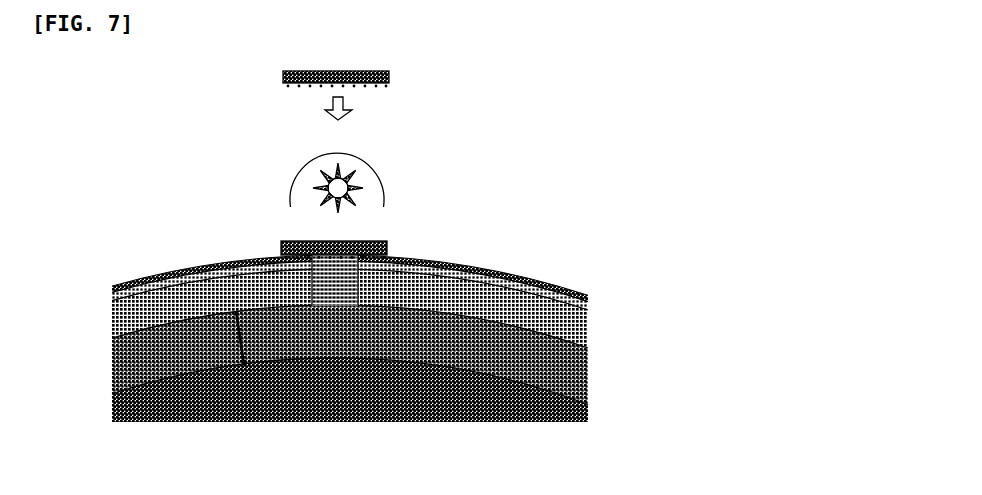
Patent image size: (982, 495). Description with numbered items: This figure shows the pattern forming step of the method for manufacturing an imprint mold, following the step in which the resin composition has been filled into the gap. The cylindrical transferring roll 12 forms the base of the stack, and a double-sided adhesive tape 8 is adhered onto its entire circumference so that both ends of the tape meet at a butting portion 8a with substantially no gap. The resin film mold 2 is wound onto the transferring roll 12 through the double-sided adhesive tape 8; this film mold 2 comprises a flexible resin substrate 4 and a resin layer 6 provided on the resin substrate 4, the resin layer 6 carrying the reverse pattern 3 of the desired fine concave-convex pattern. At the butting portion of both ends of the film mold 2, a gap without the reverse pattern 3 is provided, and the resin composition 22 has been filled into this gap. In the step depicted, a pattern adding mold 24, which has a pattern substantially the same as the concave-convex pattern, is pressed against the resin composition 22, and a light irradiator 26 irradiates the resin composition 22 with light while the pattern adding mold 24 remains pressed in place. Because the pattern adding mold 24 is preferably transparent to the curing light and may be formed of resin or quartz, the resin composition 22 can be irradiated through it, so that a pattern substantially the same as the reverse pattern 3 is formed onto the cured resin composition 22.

The resin film mold 2 is at (352, 342).
The reverse pattern 3 is at (440, 263).
The resin substrate 4 is at (582, 328).
The resin layer 6 is at (587, 306).
The double-sided adhesive tape 8 is at (578, 373).
The butting portion 8a is at (233, 337).
The transferring roll 12 is at (313, 410).
The resin composition 22 is at (325, 290).
The pattern adding mold 24 is at (389, 74).
The light irradiator 26 is at (392, 177).